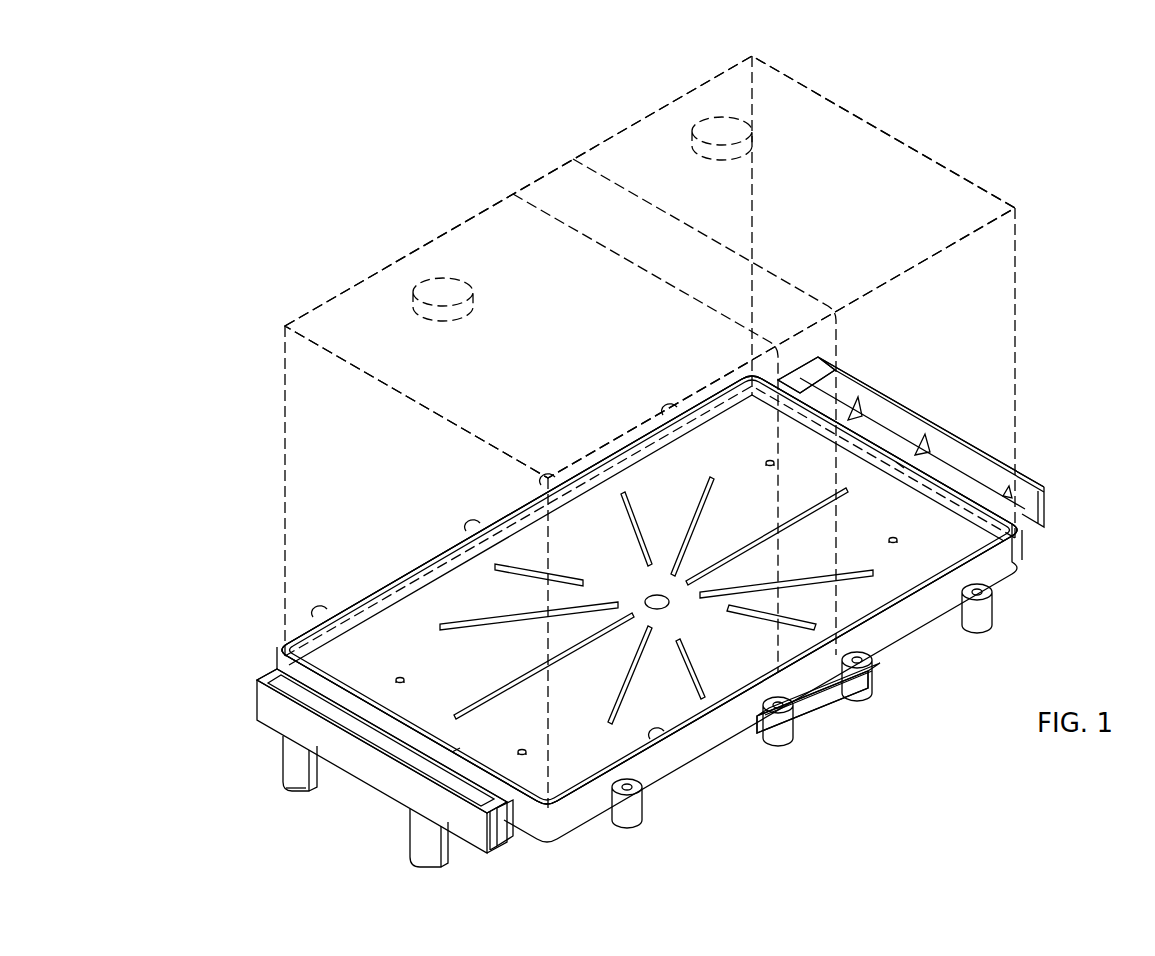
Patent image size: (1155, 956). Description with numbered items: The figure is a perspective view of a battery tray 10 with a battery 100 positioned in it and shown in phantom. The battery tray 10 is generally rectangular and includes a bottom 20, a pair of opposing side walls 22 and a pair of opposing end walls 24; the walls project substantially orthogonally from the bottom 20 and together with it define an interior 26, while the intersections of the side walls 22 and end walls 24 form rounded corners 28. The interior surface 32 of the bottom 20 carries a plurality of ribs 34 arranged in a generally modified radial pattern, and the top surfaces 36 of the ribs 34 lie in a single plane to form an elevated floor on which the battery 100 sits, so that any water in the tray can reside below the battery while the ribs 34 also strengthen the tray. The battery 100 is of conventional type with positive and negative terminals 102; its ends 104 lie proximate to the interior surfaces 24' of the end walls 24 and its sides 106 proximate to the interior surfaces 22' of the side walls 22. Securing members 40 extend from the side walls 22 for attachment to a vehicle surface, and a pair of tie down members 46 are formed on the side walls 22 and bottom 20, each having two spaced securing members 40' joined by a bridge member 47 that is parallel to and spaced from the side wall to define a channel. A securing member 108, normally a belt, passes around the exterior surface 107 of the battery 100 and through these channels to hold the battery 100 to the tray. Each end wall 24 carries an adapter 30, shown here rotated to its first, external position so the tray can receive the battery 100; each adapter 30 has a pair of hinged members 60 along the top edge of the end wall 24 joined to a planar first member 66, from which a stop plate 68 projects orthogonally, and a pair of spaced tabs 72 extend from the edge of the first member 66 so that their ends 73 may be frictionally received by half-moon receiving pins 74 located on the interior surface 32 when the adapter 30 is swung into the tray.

The battery tray 10 is at (367, 132).
The bottom 20 is at (403, 623).
The side walls 22 is at (694, 683).
The interior surfaces of side walls 22' is at (528, 597).
The end walls 24 is at (785, 640).
The interior surfaces of end walls 24' is at (678, 608).
The interior 26 is at (533, 551).
The rounded corners 28 is at (740, 373).
The adapter 30 is at (983, 363).
The interior surface 32 is at (946, 650).
The ribs 34 is at (703, 488).
The top surfaces of ribs 36 is at (770, 532).
The securing members 40 is at (853, 713).
The securing members of tie down member 40' is at (888, 676).
The tie down members 46 is at (889, 739).
The bridge member 47 is at (803, 738).
The hinged members 60 is at (810, 370).
The first member 66 is at (262, 705).
The stop plate 68 is at (340, 718).
The tabs 72 is at (292, 760).
The end of tab 73 is at (300, 795).
The receiving pins 74 is at (765, 462).
The battery 100 is at (476, 173).
The terminals 102 is at (720, 126).
The ends of battery 104 is at (300, 412).
The sides of battery 106 is at (285, 336).
The exterior surface of battery 107 is at (788, 100).
The securing member 108 is at (572, 160).